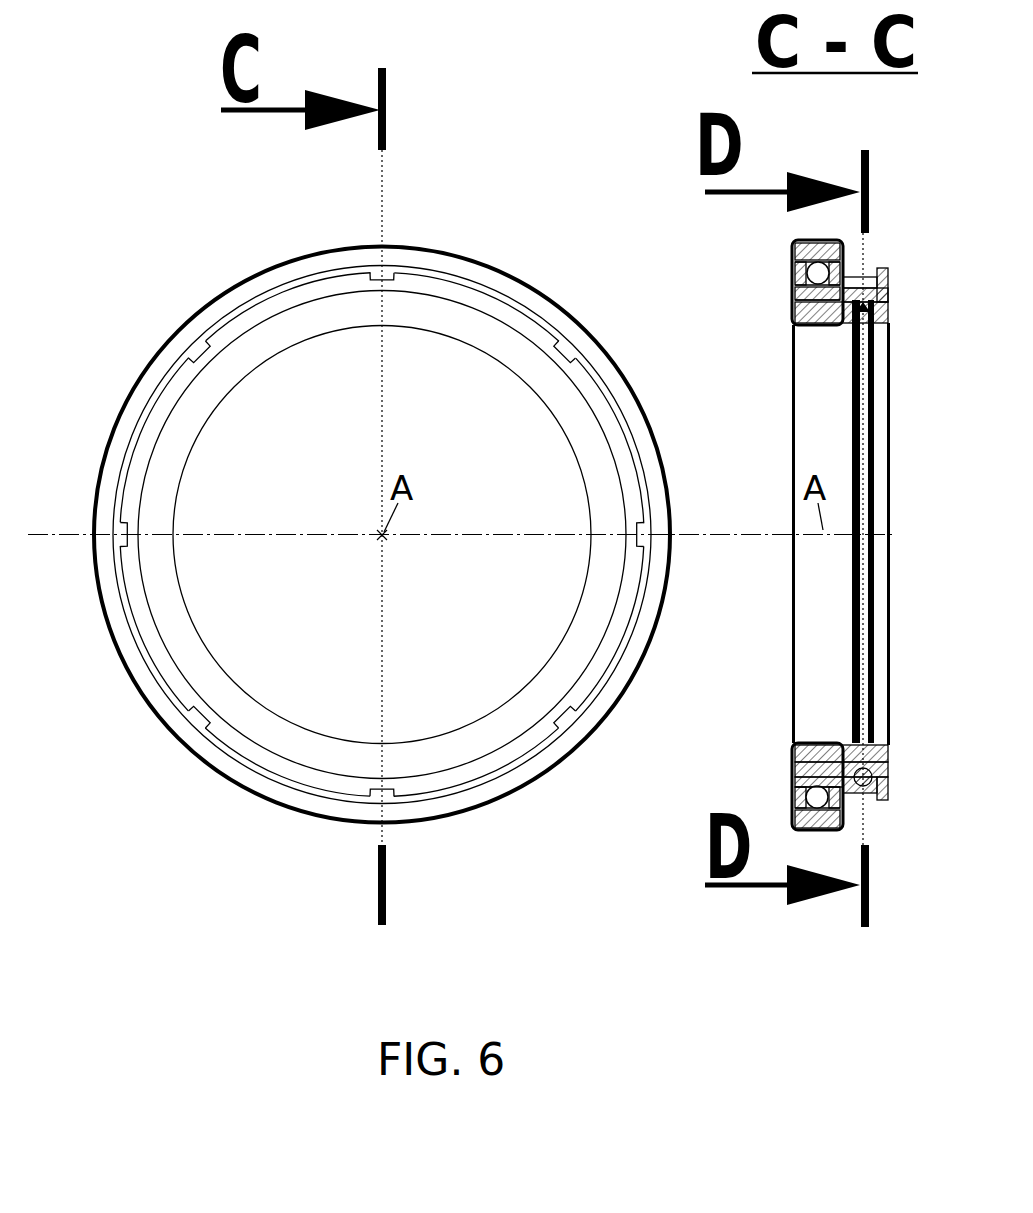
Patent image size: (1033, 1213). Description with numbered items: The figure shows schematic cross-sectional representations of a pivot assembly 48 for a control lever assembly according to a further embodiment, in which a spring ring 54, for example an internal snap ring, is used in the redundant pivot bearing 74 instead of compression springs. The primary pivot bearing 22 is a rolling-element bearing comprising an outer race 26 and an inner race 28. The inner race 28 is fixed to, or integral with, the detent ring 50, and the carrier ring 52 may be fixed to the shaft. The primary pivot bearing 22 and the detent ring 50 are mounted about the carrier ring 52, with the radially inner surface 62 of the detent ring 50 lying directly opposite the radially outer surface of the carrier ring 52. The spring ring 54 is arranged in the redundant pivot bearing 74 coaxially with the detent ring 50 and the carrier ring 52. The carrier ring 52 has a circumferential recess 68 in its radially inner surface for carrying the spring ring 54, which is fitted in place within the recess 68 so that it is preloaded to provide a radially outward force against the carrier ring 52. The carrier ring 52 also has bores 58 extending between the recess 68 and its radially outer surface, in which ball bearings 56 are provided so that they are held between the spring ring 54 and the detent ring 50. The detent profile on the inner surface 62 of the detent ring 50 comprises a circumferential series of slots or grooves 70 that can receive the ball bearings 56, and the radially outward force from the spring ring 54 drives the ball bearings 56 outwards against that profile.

The pivot assembly 48 is at (110, 197).
The primary pivot bearing 22 is at (152, 367).
The outer race 26 is at (793, 250).
The inner race 28 is at (793, 290).
The detent ring 50 is at (278, 767).
The carrier ring 52 is at (482, 738).
The spring ring 54 is at (863, 582).
The ball bearings 56 is at (847, 760).
The bores 58 is at (843, 745).
The radially inner surface 62 is at (163, 655).
The circumferential recess 68 is at (888, 298).
The slots or grooves 70 is at (863, 800).
The redundant pivot bearing 74 is at (290, 307).